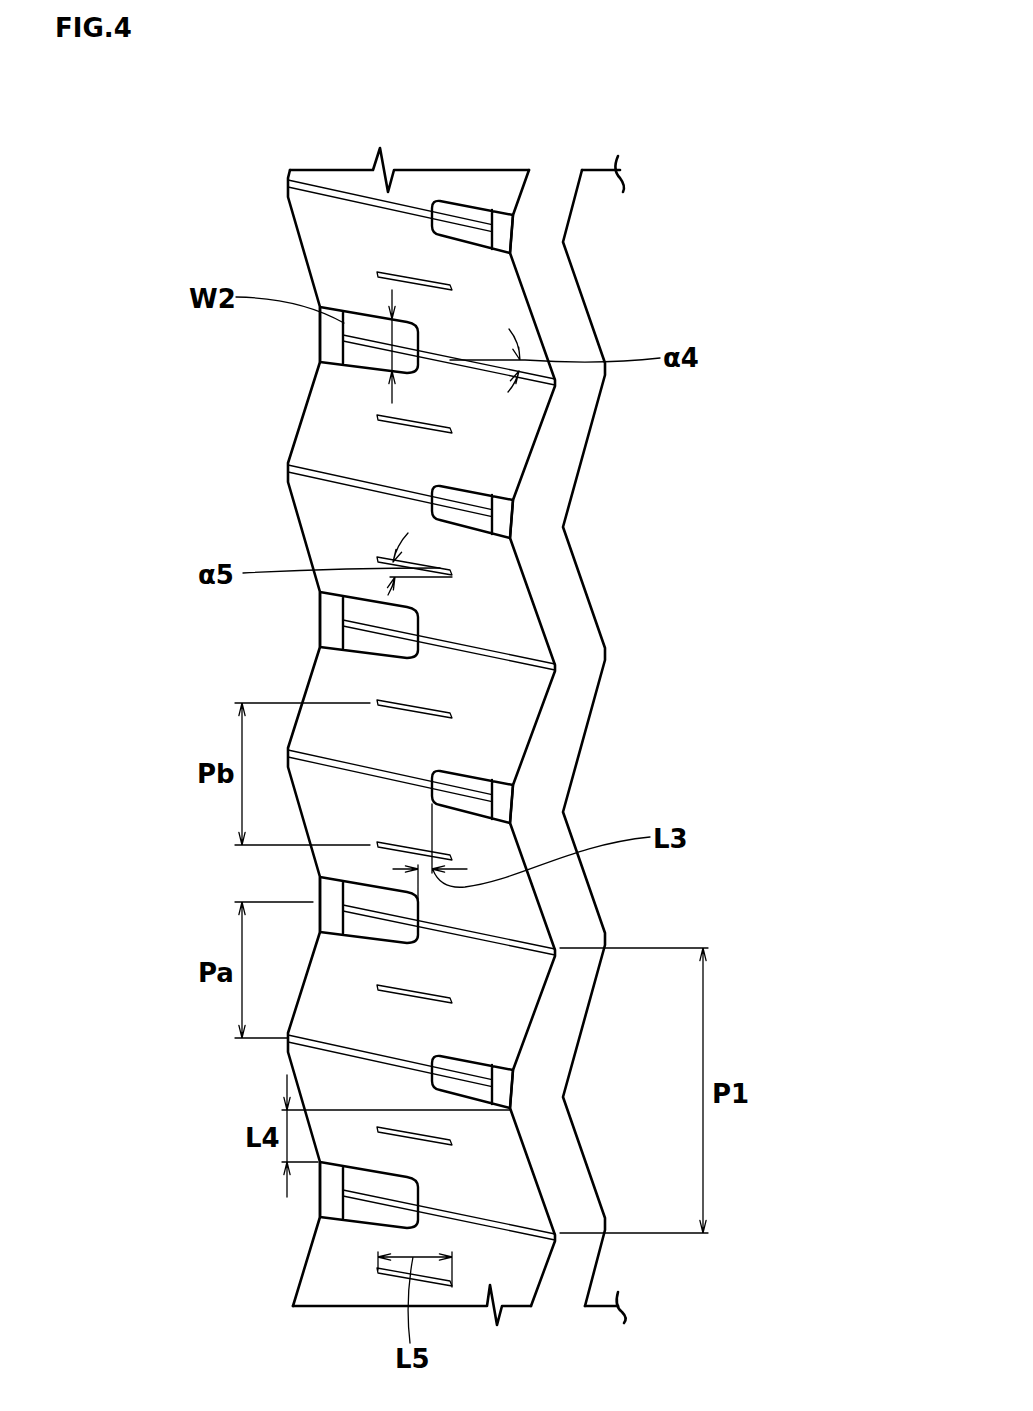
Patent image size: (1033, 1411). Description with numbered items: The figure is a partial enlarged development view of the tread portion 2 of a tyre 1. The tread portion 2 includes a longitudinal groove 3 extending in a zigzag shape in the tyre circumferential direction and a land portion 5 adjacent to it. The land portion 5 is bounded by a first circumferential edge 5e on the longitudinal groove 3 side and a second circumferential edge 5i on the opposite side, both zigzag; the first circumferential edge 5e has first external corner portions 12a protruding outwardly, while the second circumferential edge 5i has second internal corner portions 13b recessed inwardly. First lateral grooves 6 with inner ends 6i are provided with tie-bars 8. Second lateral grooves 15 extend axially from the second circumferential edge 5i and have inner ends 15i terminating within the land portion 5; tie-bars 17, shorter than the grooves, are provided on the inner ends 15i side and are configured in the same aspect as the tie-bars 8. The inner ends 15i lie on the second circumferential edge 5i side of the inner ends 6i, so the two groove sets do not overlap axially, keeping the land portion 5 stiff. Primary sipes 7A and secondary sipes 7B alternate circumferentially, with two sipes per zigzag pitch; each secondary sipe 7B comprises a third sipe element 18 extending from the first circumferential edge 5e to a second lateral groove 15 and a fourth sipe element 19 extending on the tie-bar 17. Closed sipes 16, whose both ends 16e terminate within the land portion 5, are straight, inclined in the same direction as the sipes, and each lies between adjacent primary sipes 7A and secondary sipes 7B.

The tyre 1 is at (805, 138).
The tread portion 2 is at (723, 168).
The longitudinal groove 3 is at (567, 1288).
The land portion 5 is at (332, 210).
The first circumferential edge 5e is at (527, 192).
The second circumferential edge 5i is at (294, 226).
The first lateral groove 6 is at (467, 523).
The inner end of first lateral groove 6i is at (438, 510).
The primary sipe 7A is at (273, 470).
The secondary sipe 7B is at (468, 629).
The tie-bar of first lateral groove 8 is at (462, 213).
The first external corner portion 12a is at (577, 673).
The second internal corner portion 13b is at (285, 626).
The second lateral groove 15 is at (364, 357).
The inner end of second lateral groove 15i is at (422, 350).
The closed sipe 16 is at (420, 420).
The end of closed sipe 16e is at (385, 418).
The tie-bar of second lateral groove 17 is at (367, 897).
The third sipe element 18 is at (502, 655).
The fourth sipe element 19 is at (385, 635).